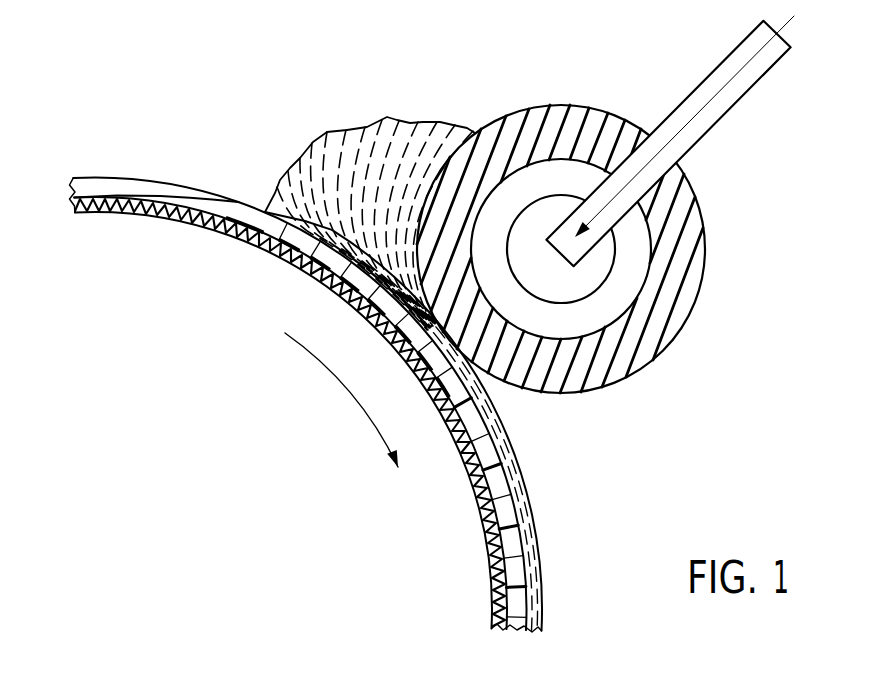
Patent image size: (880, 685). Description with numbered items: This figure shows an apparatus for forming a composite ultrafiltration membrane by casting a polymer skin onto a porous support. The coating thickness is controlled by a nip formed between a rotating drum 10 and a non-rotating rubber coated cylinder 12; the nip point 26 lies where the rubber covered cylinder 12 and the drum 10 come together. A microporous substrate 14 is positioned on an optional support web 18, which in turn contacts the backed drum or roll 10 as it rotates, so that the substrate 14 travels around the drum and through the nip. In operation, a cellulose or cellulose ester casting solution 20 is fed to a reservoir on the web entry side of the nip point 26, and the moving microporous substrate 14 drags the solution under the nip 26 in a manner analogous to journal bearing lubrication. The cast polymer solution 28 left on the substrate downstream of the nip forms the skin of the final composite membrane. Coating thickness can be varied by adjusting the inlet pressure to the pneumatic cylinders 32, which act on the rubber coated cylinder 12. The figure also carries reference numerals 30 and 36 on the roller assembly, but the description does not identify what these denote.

The rotating drum 10 is at (282, 444).
The non-rotating rubber coated cylinder 12 is at (540, 160).
The microporous substrate 14 is at (157, 181).
The support web 18 is at (90, 200).
The casting solution 20 is at (326, 133).
The nip point 26 is at (497, 395).
The cast polymer solution 28 is at (556, 545).
The roller outer surface 30 is at (703, 283).
The pneumatic cylinders 32 is at (740, 98).
The roller hub 36 is at (593, 294).